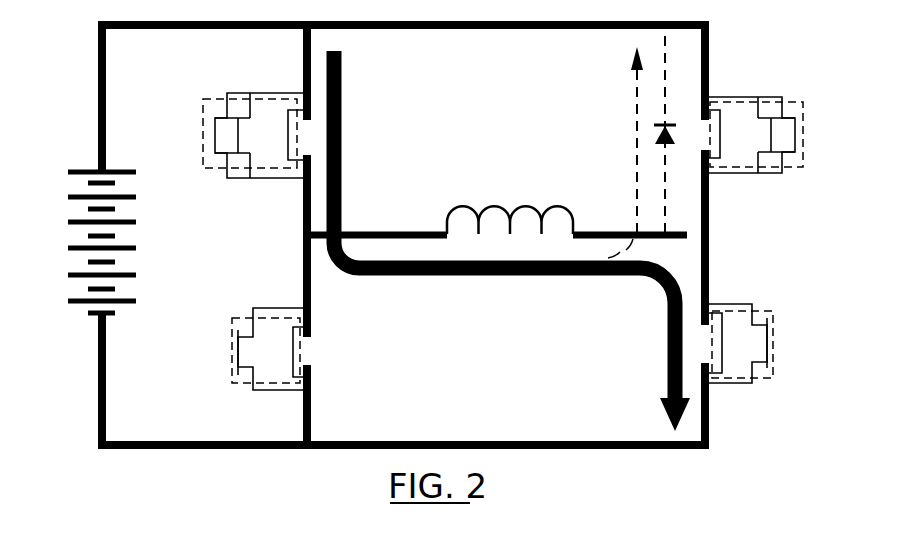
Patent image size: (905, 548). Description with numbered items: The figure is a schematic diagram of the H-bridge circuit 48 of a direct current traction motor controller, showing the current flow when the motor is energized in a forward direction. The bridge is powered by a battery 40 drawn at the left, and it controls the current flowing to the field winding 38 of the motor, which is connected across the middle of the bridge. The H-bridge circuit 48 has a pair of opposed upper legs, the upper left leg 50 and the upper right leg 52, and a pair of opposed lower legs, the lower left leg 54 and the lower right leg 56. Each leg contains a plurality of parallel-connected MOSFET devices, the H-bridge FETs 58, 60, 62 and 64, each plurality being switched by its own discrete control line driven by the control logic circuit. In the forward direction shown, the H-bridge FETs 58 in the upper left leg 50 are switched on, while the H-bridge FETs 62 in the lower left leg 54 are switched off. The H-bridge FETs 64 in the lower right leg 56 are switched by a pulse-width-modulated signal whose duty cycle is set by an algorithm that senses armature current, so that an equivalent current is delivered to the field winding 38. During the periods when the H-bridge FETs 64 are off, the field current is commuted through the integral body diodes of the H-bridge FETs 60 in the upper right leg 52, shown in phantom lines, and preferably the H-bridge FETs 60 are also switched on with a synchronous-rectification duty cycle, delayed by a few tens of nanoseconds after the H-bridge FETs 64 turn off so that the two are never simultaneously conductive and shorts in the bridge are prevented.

The field winding 38 is at (488, 207).
The battery 40 is at (85, 170).
The H-bridge circuit 48 is at (718, 462).
The upper left leg 50 is at (303, 60).
The upper right leg 52 is at (708, 62).
The lower left leg 54 is at (303, 268).
The lower right leg 56 is at (708, 265).
The H-bridge FETs 58 is at (215, 147).
The H-bridge FETs 60 is at (800, 120).
The H-bridge FETs 62 is at (232, 358).
The H-bridge FETs 64 is at (768, 328).